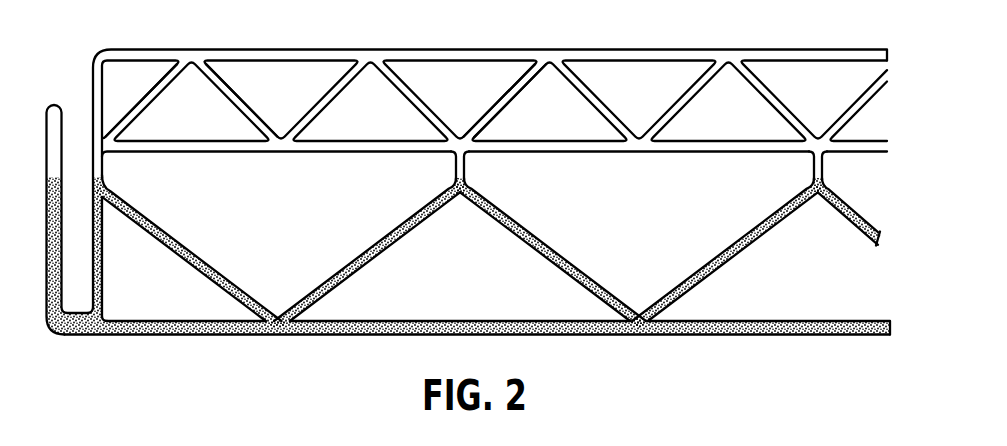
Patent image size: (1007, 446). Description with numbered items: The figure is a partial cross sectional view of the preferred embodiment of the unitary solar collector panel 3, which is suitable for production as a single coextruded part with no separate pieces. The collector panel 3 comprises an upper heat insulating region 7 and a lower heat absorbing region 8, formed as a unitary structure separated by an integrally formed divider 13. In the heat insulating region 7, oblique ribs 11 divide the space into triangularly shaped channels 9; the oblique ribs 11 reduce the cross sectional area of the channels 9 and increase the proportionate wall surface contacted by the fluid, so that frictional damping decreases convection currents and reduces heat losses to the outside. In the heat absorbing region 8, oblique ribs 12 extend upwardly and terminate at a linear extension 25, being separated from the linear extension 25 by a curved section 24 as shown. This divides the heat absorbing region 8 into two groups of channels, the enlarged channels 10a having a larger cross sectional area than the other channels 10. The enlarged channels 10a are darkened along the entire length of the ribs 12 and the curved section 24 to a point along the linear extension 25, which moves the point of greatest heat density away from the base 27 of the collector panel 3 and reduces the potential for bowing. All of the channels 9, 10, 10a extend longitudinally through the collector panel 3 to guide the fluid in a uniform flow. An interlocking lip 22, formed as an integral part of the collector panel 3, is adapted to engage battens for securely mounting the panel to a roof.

The solar collector panel 3 is at (105, 43).
The heat insulating region 7 is at (509, 77).
The heat absorbing region 8 is at (507, 238).
The channels 9 is at (145, 77).
The channels 10 is at (193, 307).
The enlarged channels 10a is at (345, 250).
The oblique ribs 11 is at (233, 90).
The oblique ribs 12 is at (245, 297).
The divider 13 is at (370, 148).
The interlocking lip 22 is at (50, 158).
The curved section 24 is at (110, 188).
The linear extension 25 is at (100, 162).
The base 27 is at (575, 338).